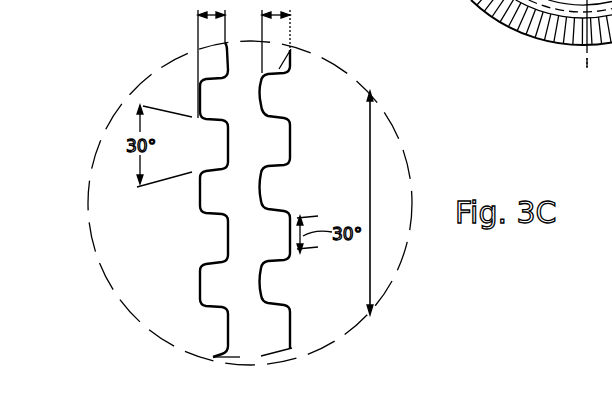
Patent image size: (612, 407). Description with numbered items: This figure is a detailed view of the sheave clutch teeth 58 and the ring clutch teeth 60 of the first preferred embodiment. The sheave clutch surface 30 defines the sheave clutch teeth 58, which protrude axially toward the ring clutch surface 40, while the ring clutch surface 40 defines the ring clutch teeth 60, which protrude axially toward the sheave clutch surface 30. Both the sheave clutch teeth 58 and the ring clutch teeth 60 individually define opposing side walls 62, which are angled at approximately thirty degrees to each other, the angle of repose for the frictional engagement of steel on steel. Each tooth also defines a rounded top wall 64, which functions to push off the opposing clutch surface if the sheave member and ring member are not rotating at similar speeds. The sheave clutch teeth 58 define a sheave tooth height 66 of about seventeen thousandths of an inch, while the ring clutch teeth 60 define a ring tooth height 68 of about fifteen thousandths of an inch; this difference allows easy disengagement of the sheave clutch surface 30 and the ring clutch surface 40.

The sheave clutch surface 30 is at (263, 302).
The ring clutch surface 40 is at (232, 337).
The sheave clutch teeth 58 is at (279, 98).
The ring clutch teeth 60 is at (197, 250).
The opposing side walls 62 is at (200, 110).
The rounded top wall 64 is at (210, 238).
The sheave tooth height 66 is at (277, 14).
The ring tooth height 68 is at (209, 16).